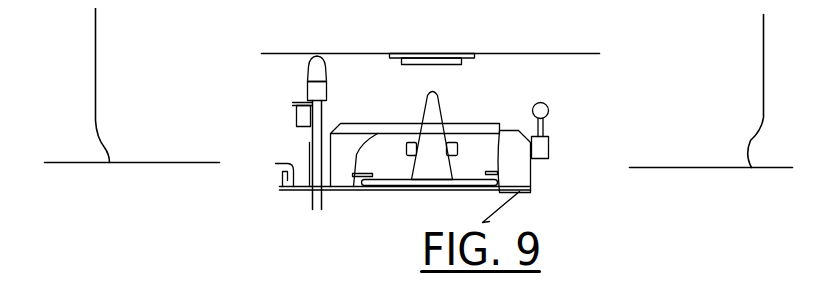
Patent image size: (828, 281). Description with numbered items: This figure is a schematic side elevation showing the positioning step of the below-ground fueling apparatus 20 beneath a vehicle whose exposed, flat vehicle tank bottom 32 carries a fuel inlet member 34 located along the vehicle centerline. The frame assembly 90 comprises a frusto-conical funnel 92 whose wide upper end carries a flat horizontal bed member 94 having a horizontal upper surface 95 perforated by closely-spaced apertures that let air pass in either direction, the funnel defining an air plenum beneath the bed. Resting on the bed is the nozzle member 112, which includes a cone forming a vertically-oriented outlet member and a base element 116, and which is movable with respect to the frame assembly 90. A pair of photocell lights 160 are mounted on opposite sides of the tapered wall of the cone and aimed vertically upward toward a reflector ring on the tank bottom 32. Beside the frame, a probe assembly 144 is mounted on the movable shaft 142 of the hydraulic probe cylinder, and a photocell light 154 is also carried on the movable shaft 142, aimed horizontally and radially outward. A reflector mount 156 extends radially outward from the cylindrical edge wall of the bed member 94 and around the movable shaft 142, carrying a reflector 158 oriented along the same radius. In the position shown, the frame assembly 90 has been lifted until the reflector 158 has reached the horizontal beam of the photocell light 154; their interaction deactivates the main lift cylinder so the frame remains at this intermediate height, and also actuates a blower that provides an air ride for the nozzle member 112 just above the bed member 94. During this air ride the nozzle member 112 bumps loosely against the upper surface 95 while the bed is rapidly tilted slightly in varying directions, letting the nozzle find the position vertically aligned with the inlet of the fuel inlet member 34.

The below-ground fueling apparatus 20 is at (596, 277).
The vehicle tank bottom 32 is at (567, 51).
The fuel inlet member 34 is at (452, 61).
The frame assembly 90 is at (485, 153).
The frusto-conical funnel 92 is at (497, 207).
The bed member 94 is at (338, 188).
The upper surface 95 is at (382, 202).
The nozzle member 112 is at (432, 143).
The base element 116 is at (467, 178).
The movable shaft 142 is at (311, 145).
The probe assembly 144 is at (310, 71).
The photocell light 154 is at (309, 184).
The reflector mount 156 is at (288, 187).
The reflector 158 is at (276, 161).
The photocell lights 160 is at (410, 140).